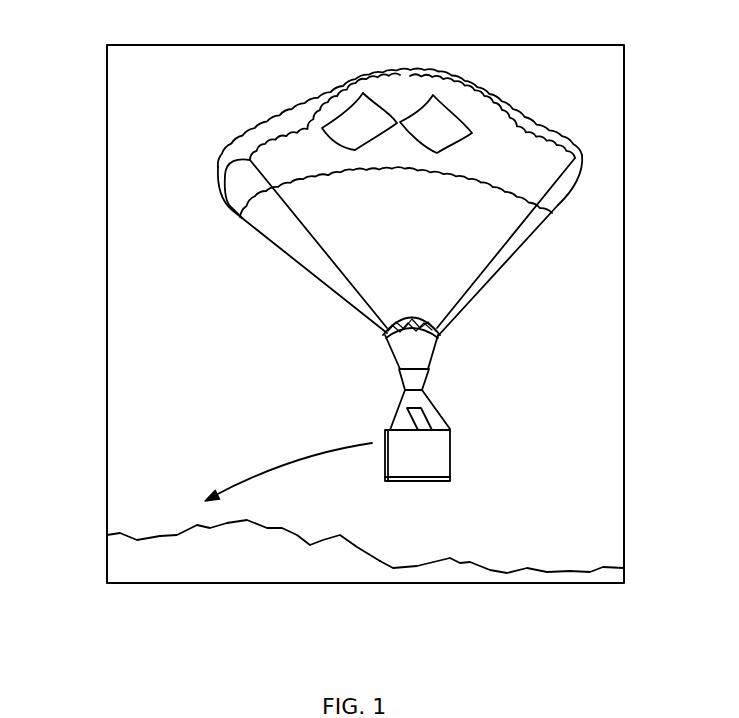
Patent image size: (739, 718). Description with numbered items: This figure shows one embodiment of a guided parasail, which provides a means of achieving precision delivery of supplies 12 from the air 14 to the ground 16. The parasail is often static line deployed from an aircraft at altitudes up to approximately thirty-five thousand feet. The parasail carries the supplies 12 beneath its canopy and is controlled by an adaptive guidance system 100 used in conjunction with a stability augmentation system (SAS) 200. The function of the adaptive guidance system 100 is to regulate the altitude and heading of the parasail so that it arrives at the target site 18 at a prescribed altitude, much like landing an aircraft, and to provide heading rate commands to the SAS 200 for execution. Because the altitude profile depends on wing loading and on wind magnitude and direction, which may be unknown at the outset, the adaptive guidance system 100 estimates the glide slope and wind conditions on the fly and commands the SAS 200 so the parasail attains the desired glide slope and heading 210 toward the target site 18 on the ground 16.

The air 14 is at (170, 106).
The adaptive guidance system 100 is at (450, 428).
The stability augmentation system (SAS) 200 is at (450, 440).
The supplies 12 is at (450, 458).
The desired glide slope and heading 210 is at (270, 467).
The target site 18 is at (160, 536).
The ground 16 is at (562, 578).